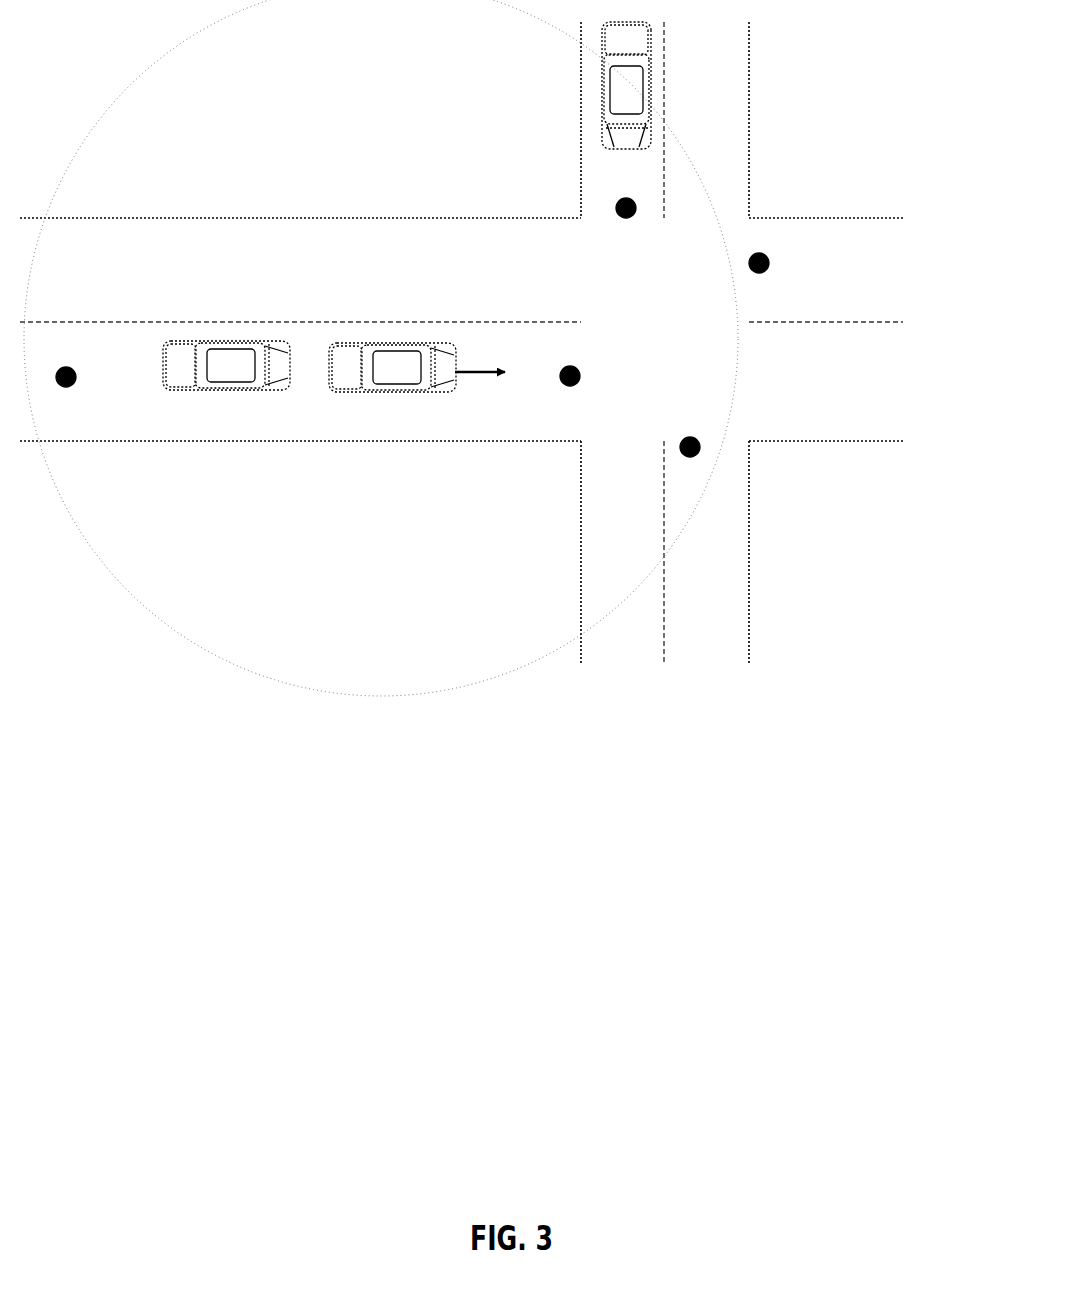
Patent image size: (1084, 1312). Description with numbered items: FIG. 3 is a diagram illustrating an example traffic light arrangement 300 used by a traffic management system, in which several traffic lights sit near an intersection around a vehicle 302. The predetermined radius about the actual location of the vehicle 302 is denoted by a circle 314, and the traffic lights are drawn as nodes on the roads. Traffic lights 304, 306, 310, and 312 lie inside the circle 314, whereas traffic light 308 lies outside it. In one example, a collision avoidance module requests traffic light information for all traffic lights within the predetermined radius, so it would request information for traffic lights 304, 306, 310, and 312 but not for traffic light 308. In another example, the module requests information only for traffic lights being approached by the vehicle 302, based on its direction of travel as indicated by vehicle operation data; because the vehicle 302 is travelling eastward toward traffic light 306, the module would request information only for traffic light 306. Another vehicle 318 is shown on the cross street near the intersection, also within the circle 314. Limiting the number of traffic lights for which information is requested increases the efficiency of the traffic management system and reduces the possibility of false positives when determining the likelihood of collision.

The driving environment / scenario 300 is at (187, 1227).
The vehicle 302 is at (398, 392).
The traffic light 304 is at (230, 375).
The traffic light 306 is at (631, 374).
The traffic light 308 is at (819, 259).
The traffic light 310 is at (656, 252).
The traffic light 312 is at (731, 431).
The circle 314 is at (254, 677).
The cross-traffic vehicle 318 is at (603, 132).